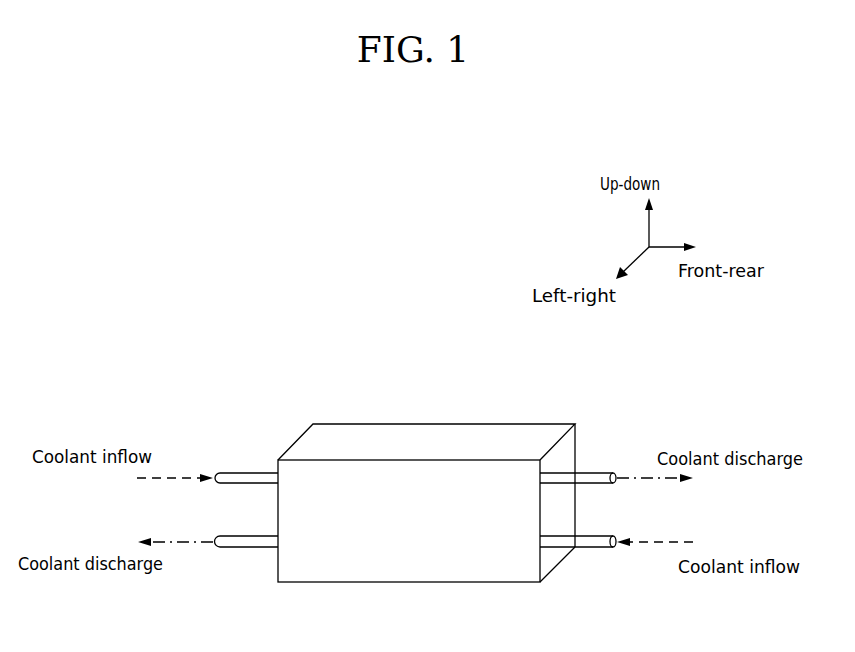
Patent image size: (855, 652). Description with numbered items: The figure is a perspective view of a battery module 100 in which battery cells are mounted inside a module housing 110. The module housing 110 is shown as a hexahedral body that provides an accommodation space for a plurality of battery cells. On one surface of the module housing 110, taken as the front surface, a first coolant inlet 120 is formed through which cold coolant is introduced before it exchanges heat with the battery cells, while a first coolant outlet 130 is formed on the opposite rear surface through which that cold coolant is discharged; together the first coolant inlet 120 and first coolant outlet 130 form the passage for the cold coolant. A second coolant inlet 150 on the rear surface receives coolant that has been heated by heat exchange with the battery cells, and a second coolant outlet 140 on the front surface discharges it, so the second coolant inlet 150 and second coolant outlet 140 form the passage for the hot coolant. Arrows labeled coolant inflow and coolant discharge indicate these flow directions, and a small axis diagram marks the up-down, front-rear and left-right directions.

The battery module 100 is at (409, 352).
The module housing 110 is at (498, 440).
The first coolant inlet 120 is at (243, 476).
The first coolant outlet 130 is at (601, 476).
The second coolant outlet 140 is at (242, 543).
The second coolant inlet 150 is at (593, 545).